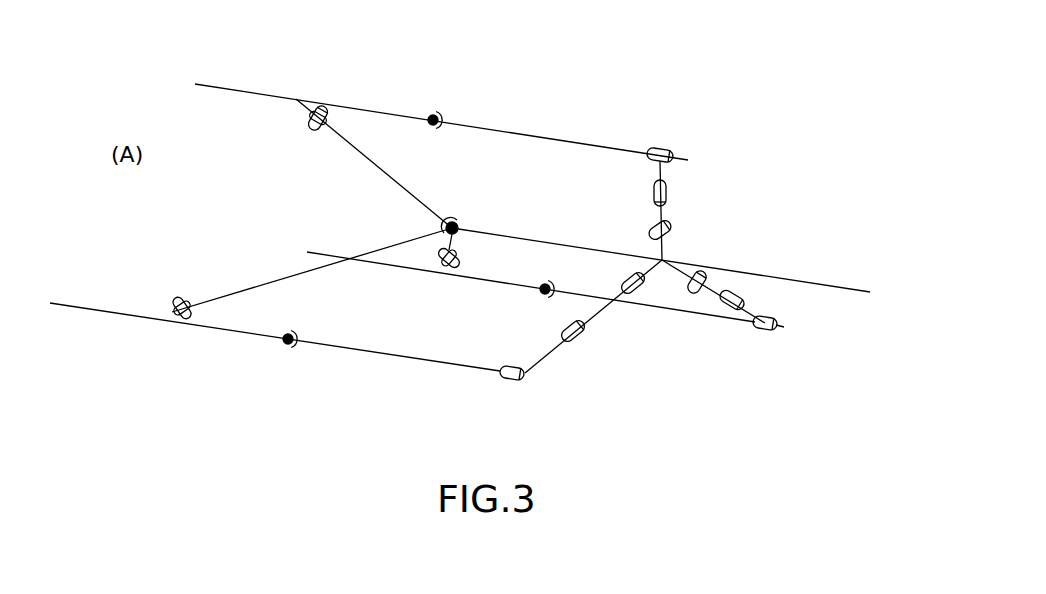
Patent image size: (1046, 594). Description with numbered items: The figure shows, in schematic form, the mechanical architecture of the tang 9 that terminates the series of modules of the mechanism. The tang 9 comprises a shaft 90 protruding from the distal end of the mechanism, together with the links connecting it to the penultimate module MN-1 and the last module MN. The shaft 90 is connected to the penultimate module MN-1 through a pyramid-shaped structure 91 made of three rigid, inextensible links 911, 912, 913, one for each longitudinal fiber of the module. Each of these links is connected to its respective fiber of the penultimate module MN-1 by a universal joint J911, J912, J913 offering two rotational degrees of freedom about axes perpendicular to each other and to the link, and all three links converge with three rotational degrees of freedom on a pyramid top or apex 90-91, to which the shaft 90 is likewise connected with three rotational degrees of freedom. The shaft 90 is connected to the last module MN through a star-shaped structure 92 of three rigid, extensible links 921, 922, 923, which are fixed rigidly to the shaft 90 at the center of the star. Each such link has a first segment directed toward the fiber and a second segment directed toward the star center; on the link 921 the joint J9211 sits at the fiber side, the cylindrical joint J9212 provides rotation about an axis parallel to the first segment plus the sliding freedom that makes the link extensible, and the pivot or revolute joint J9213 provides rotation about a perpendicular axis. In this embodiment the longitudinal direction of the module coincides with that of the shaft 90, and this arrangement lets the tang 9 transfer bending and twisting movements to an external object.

The tang 9 is at (773, 151).
The shaft 90 is at (808, 282).
The pyramid top or apex 90-91 is at (475, 216).
The pyramid-shaped structure 91 is at (275, 200).
The inextensible link 911 is at (380, 160).
The inextensible link 912 is at (266, 283).
The inextensible link 913 is at (440, 236).
The universal joint J911 is at (303, 96).
The universal joint J912 is at (165, 302).
The universal joint J913 is at (462, 294).
The star-shaped structure 92 is at (646, 259).
The extensible link 921 is at (680, 168).
The extensible link 922 is at (553, 358).
The extensible link 923 is at (705, 302).
The joint J9211 is at (662, 150).
The cylindrical joint J9212 is at (668, 196).
The pivot or revolute joint J9213 is at (713, 202).
The penultimate module MN-1 is at (218, 340).
The last module MN is at (392, 363).